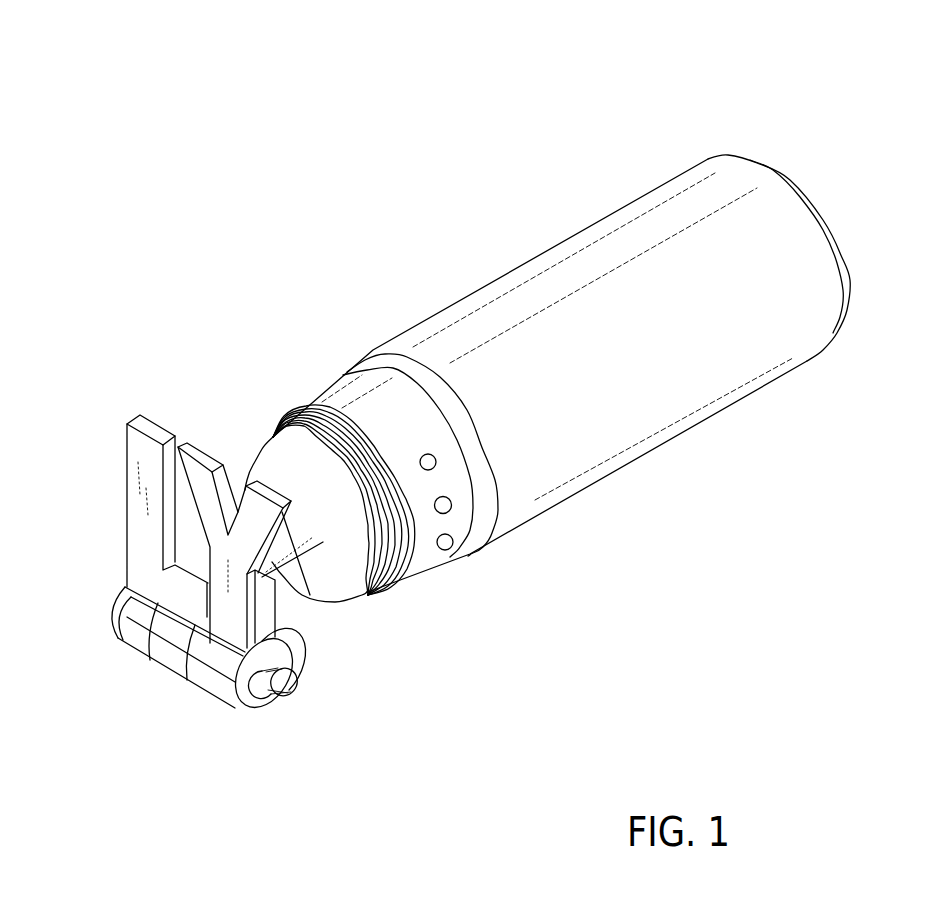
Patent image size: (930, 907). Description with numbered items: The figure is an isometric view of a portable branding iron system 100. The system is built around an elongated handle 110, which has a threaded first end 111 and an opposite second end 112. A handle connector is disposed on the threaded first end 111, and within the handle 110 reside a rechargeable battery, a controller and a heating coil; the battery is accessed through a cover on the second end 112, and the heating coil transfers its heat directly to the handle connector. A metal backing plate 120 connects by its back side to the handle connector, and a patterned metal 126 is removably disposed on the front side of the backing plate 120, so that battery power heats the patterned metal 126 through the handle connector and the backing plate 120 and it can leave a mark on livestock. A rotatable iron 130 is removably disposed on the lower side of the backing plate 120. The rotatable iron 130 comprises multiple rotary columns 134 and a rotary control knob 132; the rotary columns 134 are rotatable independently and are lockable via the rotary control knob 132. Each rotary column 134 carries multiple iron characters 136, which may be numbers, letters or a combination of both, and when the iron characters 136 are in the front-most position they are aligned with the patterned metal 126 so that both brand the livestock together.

The portable branding iron system 100 is at (612, 581).
The handle 110 is at (607, 220).
The threaded first end 111 is at (273, 437).
The second end 112 is at (795, 188).
The backing plate 120 is at (267, 610).
The patterned metal 126 is at (142, 518).
The rotatable iron 130 is at (238, 708).
The rotary control knob 132 is at (287, 693).
The rotary columns 134 is at (215, 688).
The iron characters 136 is at (125, 600).